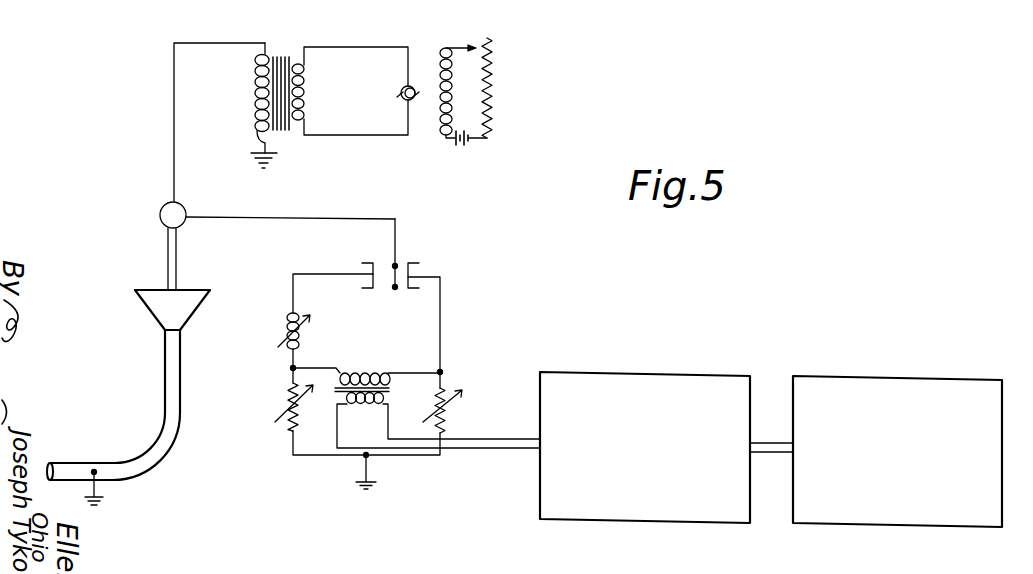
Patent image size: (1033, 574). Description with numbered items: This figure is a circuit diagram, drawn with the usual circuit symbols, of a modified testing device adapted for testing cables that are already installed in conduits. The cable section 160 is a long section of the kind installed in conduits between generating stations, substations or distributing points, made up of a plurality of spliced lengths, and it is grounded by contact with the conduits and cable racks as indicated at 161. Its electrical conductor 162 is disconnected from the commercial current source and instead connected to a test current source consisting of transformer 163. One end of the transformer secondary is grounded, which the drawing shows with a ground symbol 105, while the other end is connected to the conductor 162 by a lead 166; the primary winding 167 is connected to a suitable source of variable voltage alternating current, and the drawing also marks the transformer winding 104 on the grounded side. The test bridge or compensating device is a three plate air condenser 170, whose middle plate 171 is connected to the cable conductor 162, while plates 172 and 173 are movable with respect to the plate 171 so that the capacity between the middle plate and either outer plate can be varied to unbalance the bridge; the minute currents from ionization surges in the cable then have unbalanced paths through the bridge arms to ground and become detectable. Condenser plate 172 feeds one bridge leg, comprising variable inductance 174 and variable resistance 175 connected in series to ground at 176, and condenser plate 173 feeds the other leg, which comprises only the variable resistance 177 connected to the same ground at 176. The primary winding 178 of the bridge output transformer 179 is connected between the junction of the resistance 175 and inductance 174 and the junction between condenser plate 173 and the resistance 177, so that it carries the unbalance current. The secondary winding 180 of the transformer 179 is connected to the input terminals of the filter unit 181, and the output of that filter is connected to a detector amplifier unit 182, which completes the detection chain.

The cable section 160 is at (169, 385).
The ground connection of cable section 161 is at (98, 490).
The electrical conductor 162 is at (168, 250).
The transformer 163 is at (293, 67).
The primary winding 104 is at (257, 97).
The ground connection 105 is at (267, 147).
The lead 166 is at (174, 101).
The primary winding 167 is at (304, 88).
The three plate air condenser 170 is at (420, 242).
The middle plate 171 is at (393, 265).
The condenser plate 172 is at (367, 281).
The condenser plate 173 is at (420, 273).
The variable inductance 174 is at (291, 318).
The variable resistance 175 is at (285, 425).
The ground 176 is at (370, 475).
The variable resistance 177 is at (446, 416).
The primary winding 178 is at (367, 372).
The bridge output transformer 179 is at (386, 395).
The secondary winding 180 is at (363, 404).
The filter unit 181 is at (592, 387).
The detector amplifier unit 182 is at (852, 383).